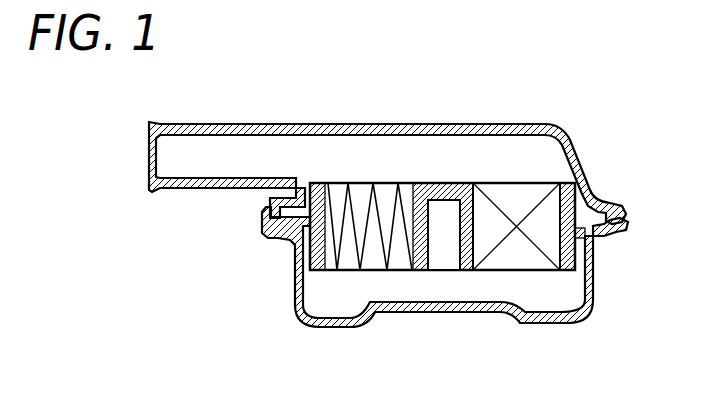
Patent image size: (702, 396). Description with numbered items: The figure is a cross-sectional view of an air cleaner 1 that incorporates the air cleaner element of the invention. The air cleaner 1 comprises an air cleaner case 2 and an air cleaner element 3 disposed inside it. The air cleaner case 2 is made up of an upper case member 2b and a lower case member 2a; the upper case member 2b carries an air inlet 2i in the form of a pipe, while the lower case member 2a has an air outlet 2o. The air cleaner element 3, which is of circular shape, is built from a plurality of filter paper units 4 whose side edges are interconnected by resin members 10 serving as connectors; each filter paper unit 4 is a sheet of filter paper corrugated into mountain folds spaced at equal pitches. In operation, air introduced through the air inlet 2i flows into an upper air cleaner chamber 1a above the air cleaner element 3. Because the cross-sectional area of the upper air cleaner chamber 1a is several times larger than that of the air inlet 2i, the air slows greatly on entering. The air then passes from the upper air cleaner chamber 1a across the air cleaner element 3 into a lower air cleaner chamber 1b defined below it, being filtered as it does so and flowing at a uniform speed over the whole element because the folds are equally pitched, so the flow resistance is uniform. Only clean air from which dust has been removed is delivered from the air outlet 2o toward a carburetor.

The air cleaner 1 is at (604, 148).
The upper air cleaner chamber 1a is at (500, 150).
The lower air cleaner chamber 1b is at (502, 287).
The air cleaner case 2 is at (612, 190).
The air inlet 2i is at (203, 124).
The upper case member 2b is at (447, 125).
The air outlet 2o is at (440, 310).
The lower case member 2a is at (553, 325).
The air cleaner element 3 is at (372, 152).
The filter paper units 4 is at (355, 240).
The resin members 10 is at (565, 290).